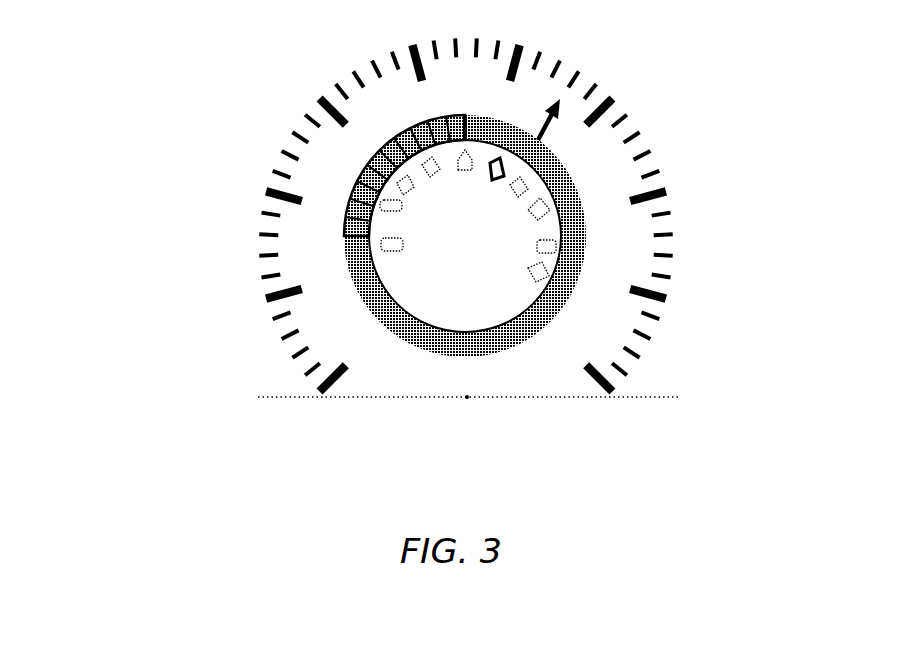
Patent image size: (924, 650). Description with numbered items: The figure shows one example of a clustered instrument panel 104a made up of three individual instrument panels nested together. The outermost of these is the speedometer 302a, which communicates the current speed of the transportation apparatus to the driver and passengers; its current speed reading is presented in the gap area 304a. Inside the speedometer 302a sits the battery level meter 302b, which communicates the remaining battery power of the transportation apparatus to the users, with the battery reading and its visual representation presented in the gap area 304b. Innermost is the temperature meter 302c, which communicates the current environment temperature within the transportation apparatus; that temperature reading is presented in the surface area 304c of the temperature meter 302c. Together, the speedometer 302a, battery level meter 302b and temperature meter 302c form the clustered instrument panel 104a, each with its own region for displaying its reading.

The clustered instrument panel 104a is at (805, 377).
The speedometer 302a is at (536, 55).
The battery level meter 302b is at (516, 167).
The temperature meter 302c is at (508, 303).
The gap area 304a is at (368, 143).
The gap area 304b is at (357, 269).
The surface area 304c is at (438, 316).